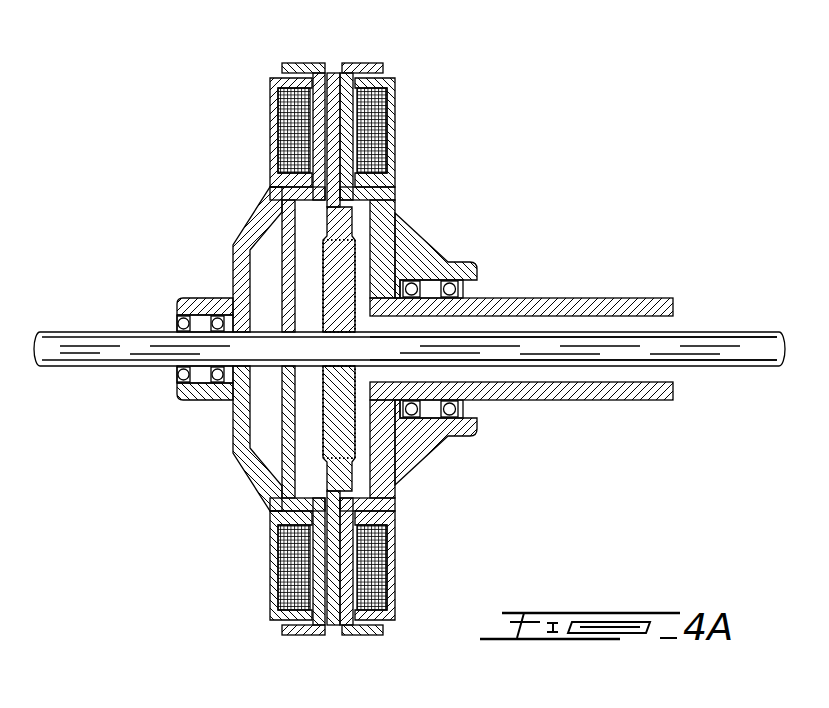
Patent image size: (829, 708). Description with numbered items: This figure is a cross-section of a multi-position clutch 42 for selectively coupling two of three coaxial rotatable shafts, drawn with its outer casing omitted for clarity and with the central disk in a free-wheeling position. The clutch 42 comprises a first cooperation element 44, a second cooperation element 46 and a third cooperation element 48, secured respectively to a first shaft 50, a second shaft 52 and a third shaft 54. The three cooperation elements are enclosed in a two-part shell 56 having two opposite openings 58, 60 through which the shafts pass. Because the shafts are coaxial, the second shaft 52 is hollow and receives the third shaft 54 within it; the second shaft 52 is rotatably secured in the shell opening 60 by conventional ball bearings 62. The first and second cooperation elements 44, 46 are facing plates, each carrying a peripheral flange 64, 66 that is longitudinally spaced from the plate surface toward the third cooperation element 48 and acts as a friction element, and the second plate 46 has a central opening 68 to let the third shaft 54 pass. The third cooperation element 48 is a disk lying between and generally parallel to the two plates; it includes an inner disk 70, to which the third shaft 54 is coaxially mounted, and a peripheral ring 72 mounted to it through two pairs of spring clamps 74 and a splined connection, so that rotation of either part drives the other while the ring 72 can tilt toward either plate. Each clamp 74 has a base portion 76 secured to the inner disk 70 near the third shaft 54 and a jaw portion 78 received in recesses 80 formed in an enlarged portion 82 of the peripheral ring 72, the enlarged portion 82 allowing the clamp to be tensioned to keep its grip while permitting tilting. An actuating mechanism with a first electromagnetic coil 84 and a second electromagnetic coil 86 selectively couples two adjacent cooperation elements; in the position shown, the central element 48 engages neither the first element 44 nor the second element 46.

The multi-position clutch 42 is at (590, 160).
The first cooperation element 44 is at (282, 262).
The second cooperation element 46 is at (380, 215).
The third cooperation element 48 is at (341, 72).
The first shaft 50 is at (80, 332).
The second shaft 52 is at (640, 299).
The third shaft 54 is at (740, 352).
The two-part shell 56 is at (360, 650).
The opening 58 is at (183, 300).
The opening 60 is at (478, 272).
The ball bearings 62 is at (412, 282).
The peripheral flange 64 is at (305, 66).
The peripheral flange 66 is at (380, 68).
The central opening 68 is at (400, 437).
The inner disk 70 is at (320, 428).
The peripheral ring 72 is at (330, 163).
The spring clamps 74 is at (190, 395).
The base portion 76 is at (353, 377).
The jaw portion 78 is at (326, 242).
The recesses 80 is at (365, 180).
The enlarged portion 82 is at (356, 492).
The first electromagnetic coil 84 is at (288, 112).
The second electromagnetic coil 86 is at (388, 117).